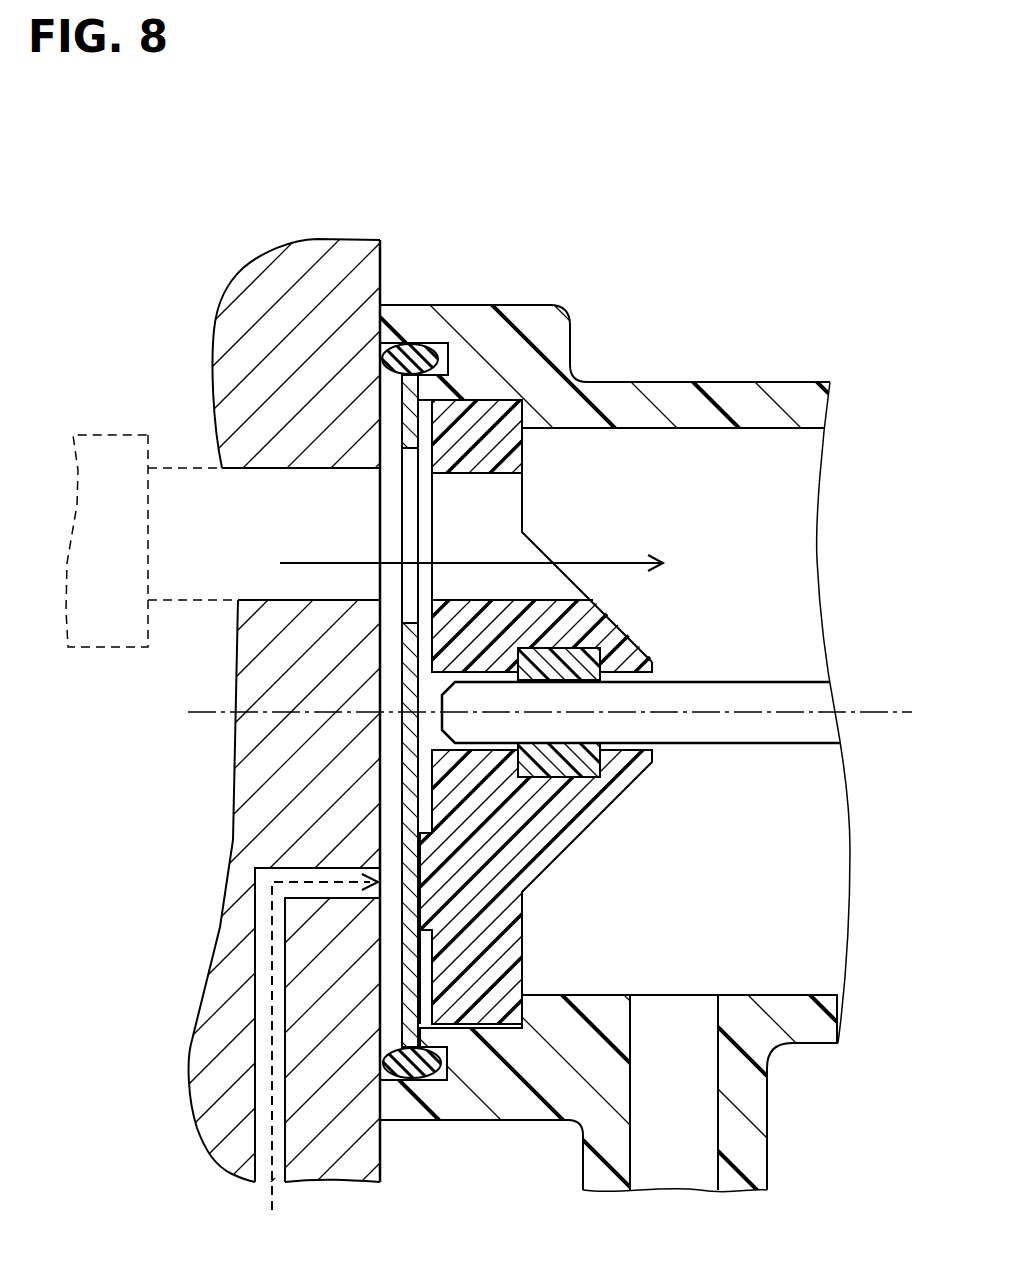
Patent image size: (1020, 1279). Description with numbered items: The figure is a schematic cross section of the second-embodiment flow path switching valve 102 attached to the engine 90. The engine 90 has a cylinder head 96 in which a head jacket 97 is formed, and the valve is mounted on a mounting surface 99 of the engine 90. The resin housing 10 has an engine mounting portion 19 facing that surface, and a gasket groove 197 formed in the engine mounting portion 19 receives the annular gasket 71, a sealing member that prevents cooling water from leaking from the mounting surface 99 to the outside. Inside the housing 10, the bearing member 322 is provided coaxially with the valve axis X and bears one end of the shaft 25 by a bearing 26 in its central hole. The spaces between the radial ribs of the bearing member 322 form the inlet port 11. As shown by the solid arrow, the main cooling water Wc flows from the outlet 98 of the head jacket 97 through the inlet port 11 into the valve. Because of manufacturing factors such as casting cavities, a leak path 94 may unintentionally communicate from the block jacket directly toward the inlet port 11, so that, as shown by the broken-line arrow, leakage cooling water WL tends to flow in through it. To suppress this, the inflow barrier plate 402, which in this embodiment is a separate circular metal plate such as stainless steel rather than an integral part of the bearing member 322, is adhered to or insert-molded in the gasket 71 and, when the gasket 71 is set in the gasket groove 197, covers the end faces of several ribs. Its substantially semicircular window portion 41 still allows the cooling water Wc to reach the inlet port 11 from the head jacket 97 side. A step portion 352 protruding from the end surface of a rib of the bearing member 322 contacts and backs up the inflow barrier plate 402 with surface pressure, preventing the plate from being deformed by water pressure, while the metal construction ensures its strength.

The engine 90 is at (510, 639).
The cylinder head 96 is at (245, 347).
The leak path 94 is at (265, 1112).
The head jacket 97 is at (108, 462).
The outlet 98 is at (258, 520).
The mounting surface 99 is at (382, 270).
The engine mounting portion 19 is at (380, 323).
The gasket 71 is at (437, 1087).
The gasket groove 197 is at (395, 480).
The inlet port 11 is at (436, 398).
The housing 10 is at (703, 372).
The flow path switching valve 102 is at (510, 639).
The bearing 26 is at (562, 663).
The shaft 25 is at (752, 700).
The valve axis X is at (863, 710).
The window portion 41 is at (412, 623).
The inflow barrier plate 402 is at (400, 777).
The step portion 352 is at (420, 867).
The bearing member 322 is at (442, 812).
The cooling water from the leak path WL is at (270, 945).
The cooling water Wc is at (318, 556).